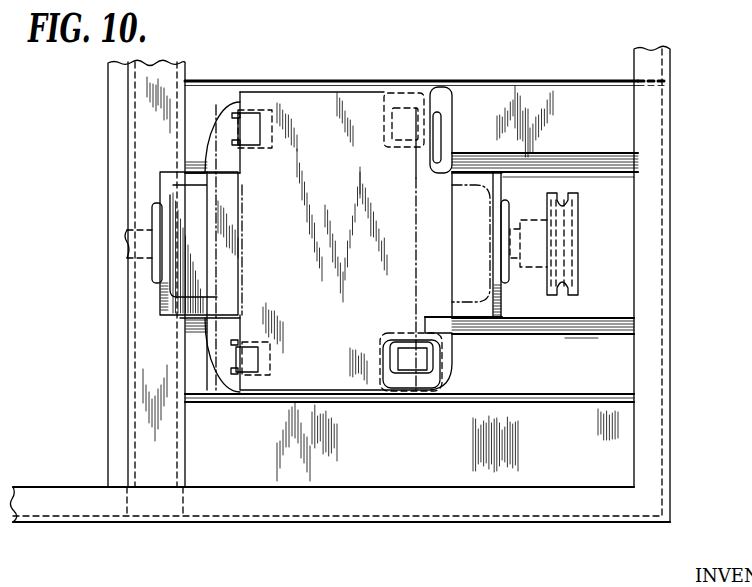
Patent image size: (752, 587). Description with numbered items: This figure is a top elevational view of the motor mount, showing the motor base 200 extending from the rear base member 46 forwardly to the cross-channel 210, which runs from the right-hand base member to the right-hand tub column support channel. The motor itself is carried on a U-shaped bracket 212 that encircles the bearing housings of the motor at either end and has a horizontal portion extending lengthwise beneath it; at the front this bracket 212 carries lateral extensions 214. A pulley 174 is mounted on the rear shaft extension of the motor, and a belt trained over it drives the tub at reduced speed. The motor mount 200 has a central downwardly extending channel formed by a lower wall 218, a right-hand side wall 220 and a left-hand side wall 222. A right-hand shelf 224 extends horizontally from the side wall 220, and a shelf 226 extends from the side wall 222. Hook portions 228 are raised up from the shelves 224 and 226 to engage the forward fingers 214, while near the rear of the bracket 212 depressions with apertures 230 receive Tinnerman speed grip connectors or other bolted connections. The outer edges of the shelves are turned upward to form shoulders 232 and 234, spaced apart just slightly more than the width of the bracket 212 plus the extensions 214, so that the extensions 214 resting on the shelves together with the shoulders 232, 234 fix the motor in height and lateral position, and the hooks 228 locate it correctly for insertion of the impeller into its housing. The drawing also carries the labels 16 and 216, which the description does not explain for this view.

The housing 16 is at (282, 94).
The rear base member 46 is at (661, 292).
The pulley 174 is at (569, 200).
The motor base 200 is at (530, 62).
The cross-channel 210 is at (151, 0).
The U-shaped bracket 212 is at (176, 173).
The lateral extensions 214 is at (248, 98).
The pivot 216 is at (435, 173).
The lower wall 218 is at (617, 263).
The right-hand side wall 220 is at (623, 323).
The left-hand side wall 222 is at (627, 173).
The right-hand shelf 224 is at (626, 378).
The shelf 226 is at (627, 106).
The hook portions 228 is at (240, 101).
The depressions with apertures 230 is at (438, 112).
The shoulder 232 is at (628, 402).
The shoulder 234 is at (343, 523).